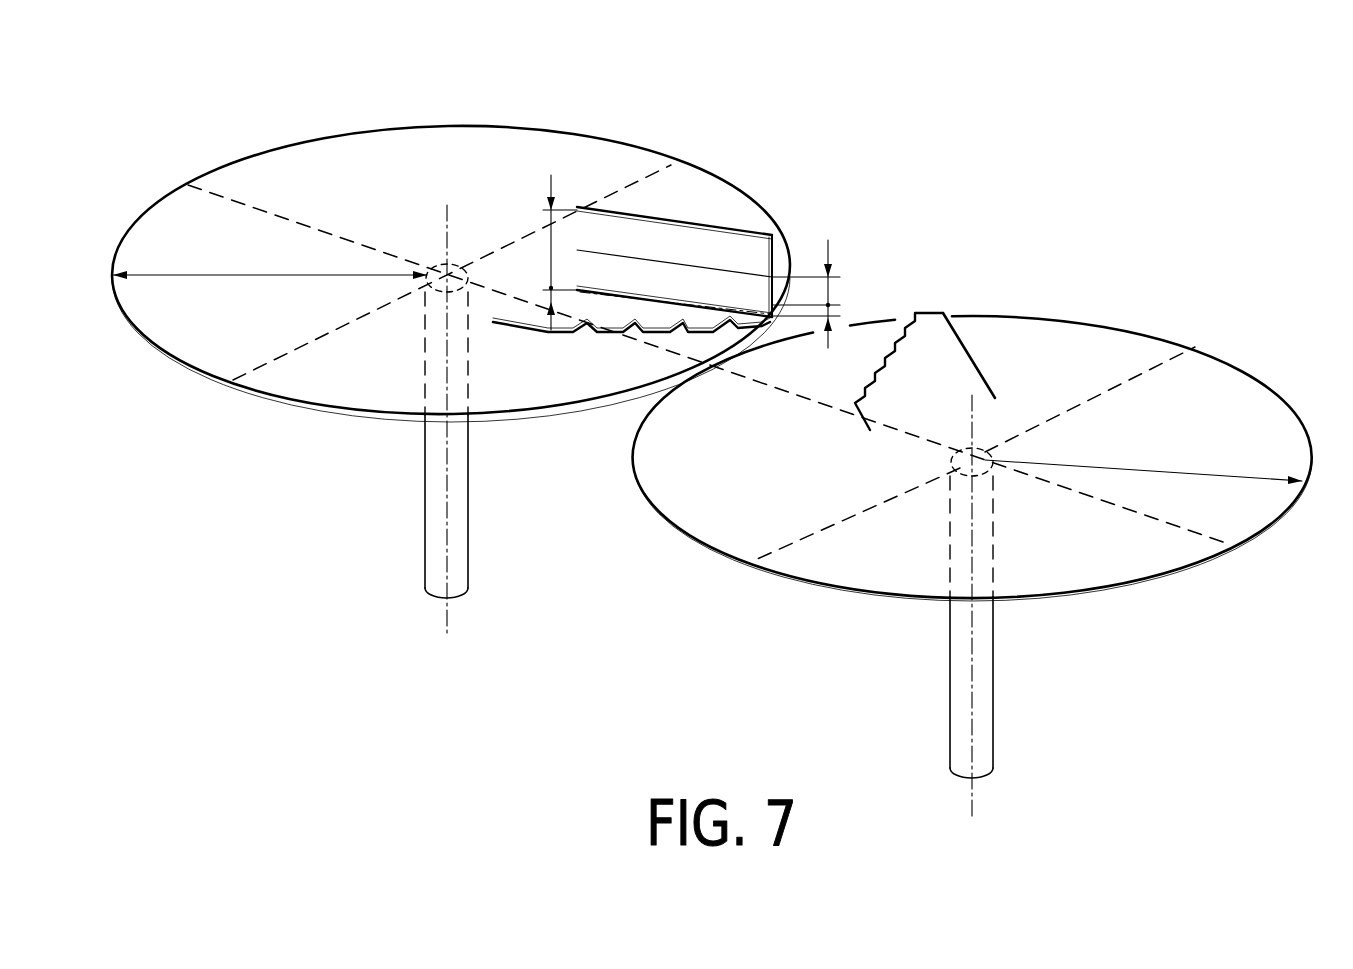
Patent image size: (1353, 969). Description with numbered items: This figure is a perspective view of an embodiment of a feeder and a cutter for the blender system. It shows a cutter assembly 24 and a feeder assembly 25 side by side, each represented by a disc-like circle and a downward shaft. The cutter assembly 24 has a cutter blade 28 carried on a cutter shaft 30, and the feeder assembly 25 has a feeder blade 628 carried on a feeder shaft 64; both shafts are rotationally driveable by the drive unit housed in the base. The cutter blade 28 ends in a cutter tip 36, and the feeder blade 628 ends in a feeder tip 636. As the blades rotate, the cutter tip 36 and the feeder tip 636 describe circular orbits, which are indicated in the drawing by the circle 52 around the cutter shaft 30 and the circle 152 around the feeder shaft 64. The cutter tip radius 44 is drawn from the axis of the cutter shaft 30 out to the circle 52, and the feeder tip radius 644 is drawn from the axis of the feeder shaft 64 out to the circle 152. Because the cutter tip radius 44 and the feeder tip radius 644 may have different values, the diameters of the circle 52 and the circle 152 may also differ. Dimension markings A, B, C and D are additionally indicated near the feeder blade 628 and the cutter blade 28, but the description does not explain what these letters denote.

The feeder assembly 25 is at (182, 125).
The circle 152 is at (140, 212).
The feeder tip radius 644 is at (254, 275).
The feeder shaft 64 is at (437, 517).
The feeder blade 628 is at (612, 321).
The feeder tip 636 is at (768, 326).
The cutter assembly 24 is at (1206, 247).
The circle 52 is at (1267, 373).
The cutter tip radius 44 is at (1200, 468).
The cutter shaft 30 is at (960, 706).
The cutter tip 36 is at (932, 312).
The cutter blade 28 is at (952, 373).
The dimension A is at (551, 288).
The dimension B is at (551, 243).
The dimension C is at (838, 318).
The dimension D is at (838, 287).